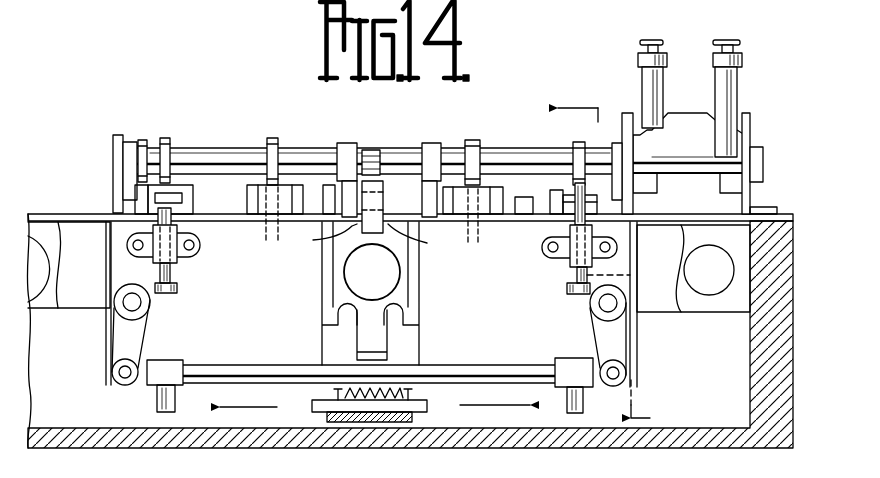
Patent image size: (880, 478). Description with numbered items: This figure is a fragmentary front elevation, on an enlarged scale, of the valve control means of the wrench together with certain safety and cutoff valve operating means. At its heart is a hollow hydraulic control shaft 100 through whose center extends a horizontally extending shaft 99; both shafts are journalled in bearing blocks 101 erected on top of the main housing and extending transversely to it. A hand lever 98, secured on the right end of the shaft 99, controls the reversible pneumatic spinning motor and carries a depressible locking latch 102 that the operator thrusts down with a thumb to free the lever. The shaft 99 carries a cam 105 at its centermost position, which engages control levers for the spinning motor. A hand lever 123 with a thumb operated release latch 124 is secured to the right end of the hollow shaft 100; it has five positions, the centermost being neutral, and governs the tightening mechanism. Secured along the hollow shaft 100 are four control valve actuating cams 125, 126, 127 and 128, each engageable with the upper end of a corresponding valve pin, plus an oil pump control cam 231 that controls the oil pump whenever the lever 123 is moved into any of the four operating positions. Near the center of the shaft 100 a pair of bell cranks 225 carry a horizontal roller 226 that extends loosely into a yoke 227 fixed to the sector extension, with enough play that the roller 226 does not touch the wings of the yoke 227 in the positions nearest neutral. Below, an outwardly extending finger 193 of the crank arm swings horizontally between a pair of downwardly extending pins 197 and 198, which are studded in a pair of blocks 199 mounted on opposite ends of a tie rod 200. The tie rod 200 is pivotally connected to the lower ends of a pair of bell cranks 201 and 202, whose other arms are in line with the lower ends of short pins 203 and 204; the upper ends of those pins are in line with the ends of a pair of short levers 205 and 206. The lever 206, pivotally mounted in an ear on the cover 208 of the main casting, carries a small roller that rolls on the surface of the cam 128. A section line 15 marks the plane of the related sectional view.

The section line 15- 15 is at (604, 264).
The hand lever 98 is at (708, 104).
The horizontally extending shaft 99 is at (373, 148).
The hollow hydraulic control shaft 100 is at (525, 149).
The bearing blocks 101 is at (128, 140).
The depressible locking latch 102 is at (733, 40).
The cam 105 is at (370, 150).
The hand lever 123 is at (673, 71).
The thumb operated release latch 124 is at (657, 40).
The control valve actuating cam 125 is at (173, 138).
The control valve actuating cam 126 is at (278, 117).
The control valve actuating cam 127 is at (468, 140).
The control valve actuating cam 128 is at (579, 141).
The outwardly extending finger 193 is at (428, 408).
The downwardly extending pin 197 is at (176, 407).
The downwardly extending pin 198 is at (567, 405).
The blocks 199 is at (168, 360).
The tie rod 200 is at (433, 365).
The bell crank 201 is at (148, 326).
The bell crank 202 is at (590, 330).
The short pin 203 is at (170, 271).
The short pin 204 is at (567, 281).
The short lever 205 is at (182, 198).
The short lever 206 is at (553, 191).
The cover 208 is at (533, 222).
The bell cranks 225 is at (338, 180).
The horizontal roller 226 is at (402, 293).
The yoke 227 is at (320, 293).
The oil pump control cam 231 is at (144, 139).